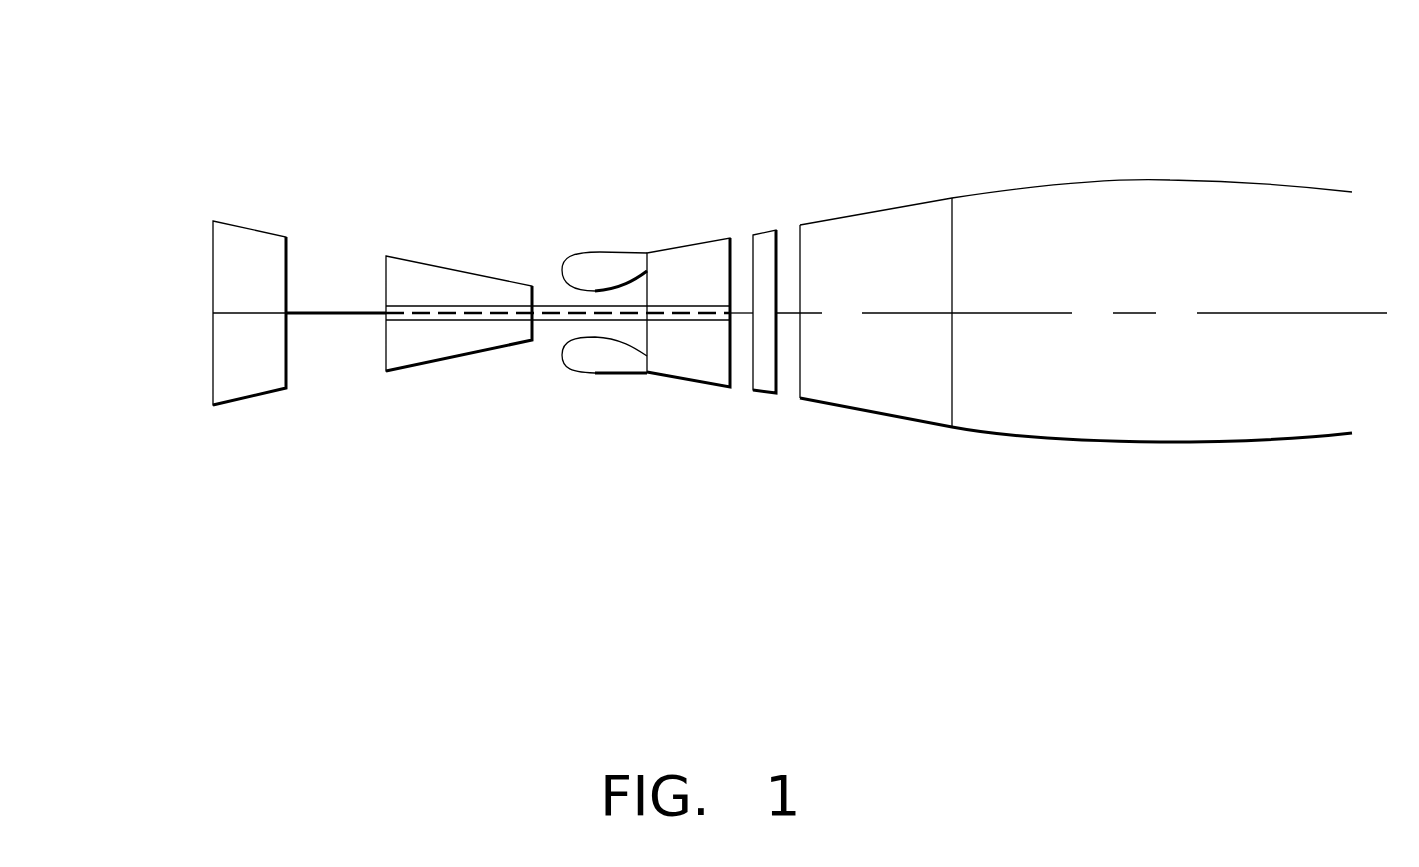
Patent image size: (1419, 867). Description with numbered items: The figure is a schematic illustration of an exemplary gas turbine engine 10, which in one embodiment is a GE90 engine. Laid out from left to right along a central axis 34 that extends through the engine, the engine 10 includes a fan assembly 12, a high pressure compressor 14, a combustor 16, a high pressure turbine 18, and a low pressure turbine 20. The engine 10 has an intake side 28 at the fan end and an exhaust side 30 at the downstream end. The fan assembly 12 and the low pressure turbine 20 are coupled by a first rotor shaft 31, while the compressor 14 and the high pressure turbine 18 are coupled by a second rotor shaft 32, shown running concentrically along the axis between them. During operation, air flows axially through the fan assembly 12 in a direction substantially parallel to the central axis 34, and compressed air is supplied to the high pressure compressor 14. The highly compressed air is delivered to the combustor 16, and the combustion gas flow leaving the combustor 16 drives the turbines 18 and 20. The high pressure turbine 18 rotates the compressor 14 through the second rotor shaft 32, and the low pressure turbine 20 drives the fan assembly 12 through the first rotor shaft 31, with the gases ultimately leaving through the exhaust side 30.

The gas turbine engine 10 is at (788, 104).
The fan assembly 12 is at (272, 392).
The high pressure compressor 14 is at (480, 352).
The combustor 16 is at (598, 376).
The high pressure turbine 18 is at (702, 390).
The low pressure turbine 20 is at (763, 393).
The intake side 28 is at (178, 265).
The exhaust side 30 is at (1010, 382).
The first rotor shaft 31 is at (310, 312).
The second rotor shaft 32 is at (548, 295).
The central axis 34 is at (1207, 313).